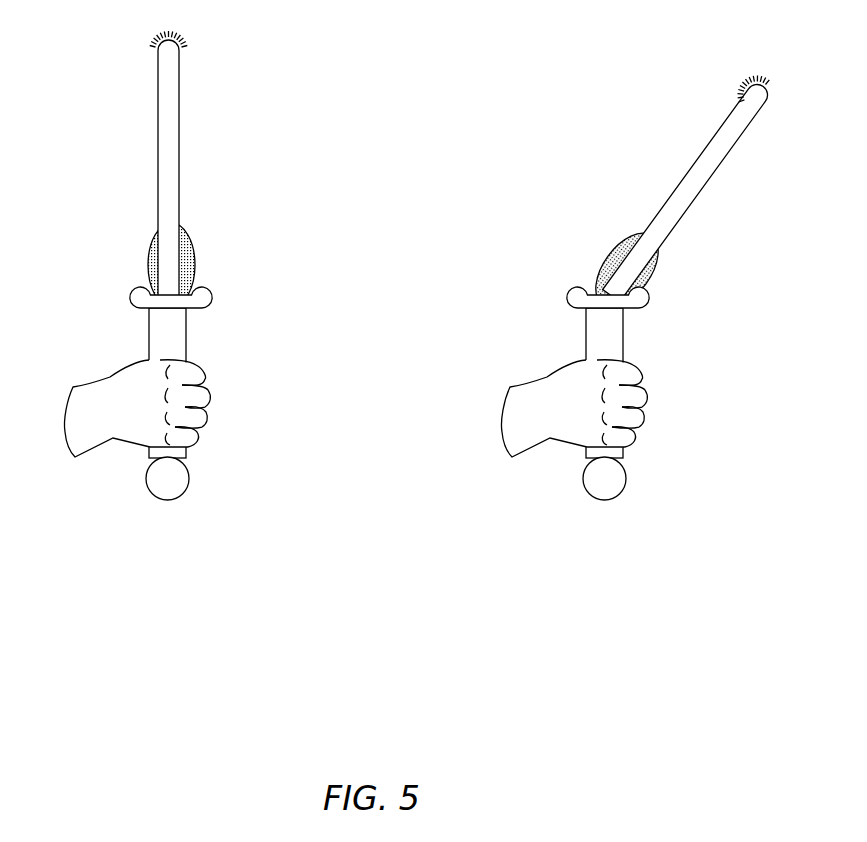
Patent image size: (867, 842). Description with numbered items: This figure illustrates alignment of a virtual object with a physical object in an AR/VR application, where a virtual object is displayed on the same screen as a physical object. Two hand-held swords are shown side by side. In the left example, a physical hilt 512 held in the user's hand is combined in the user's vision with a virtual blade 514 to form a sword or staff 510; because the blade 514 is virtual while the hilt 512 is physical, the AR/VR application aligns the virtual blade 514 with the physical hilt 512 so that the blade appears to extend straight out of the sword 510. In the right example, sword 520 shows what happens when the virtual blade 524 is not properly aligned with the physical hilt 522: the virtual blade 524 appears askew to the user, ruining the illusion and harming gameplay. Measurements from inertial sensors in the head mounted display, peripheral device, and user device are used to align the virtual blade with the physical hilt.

The sword or staff 510 is at (128, 292).
The physical hilt 512 is at (126, 325).
The virtual blade 514 is at (126, 118).
The sword 520 is at (627, 315).
The physical hilt 522 is at (566, 325).
The virtual blade 524 is at (677, 121).